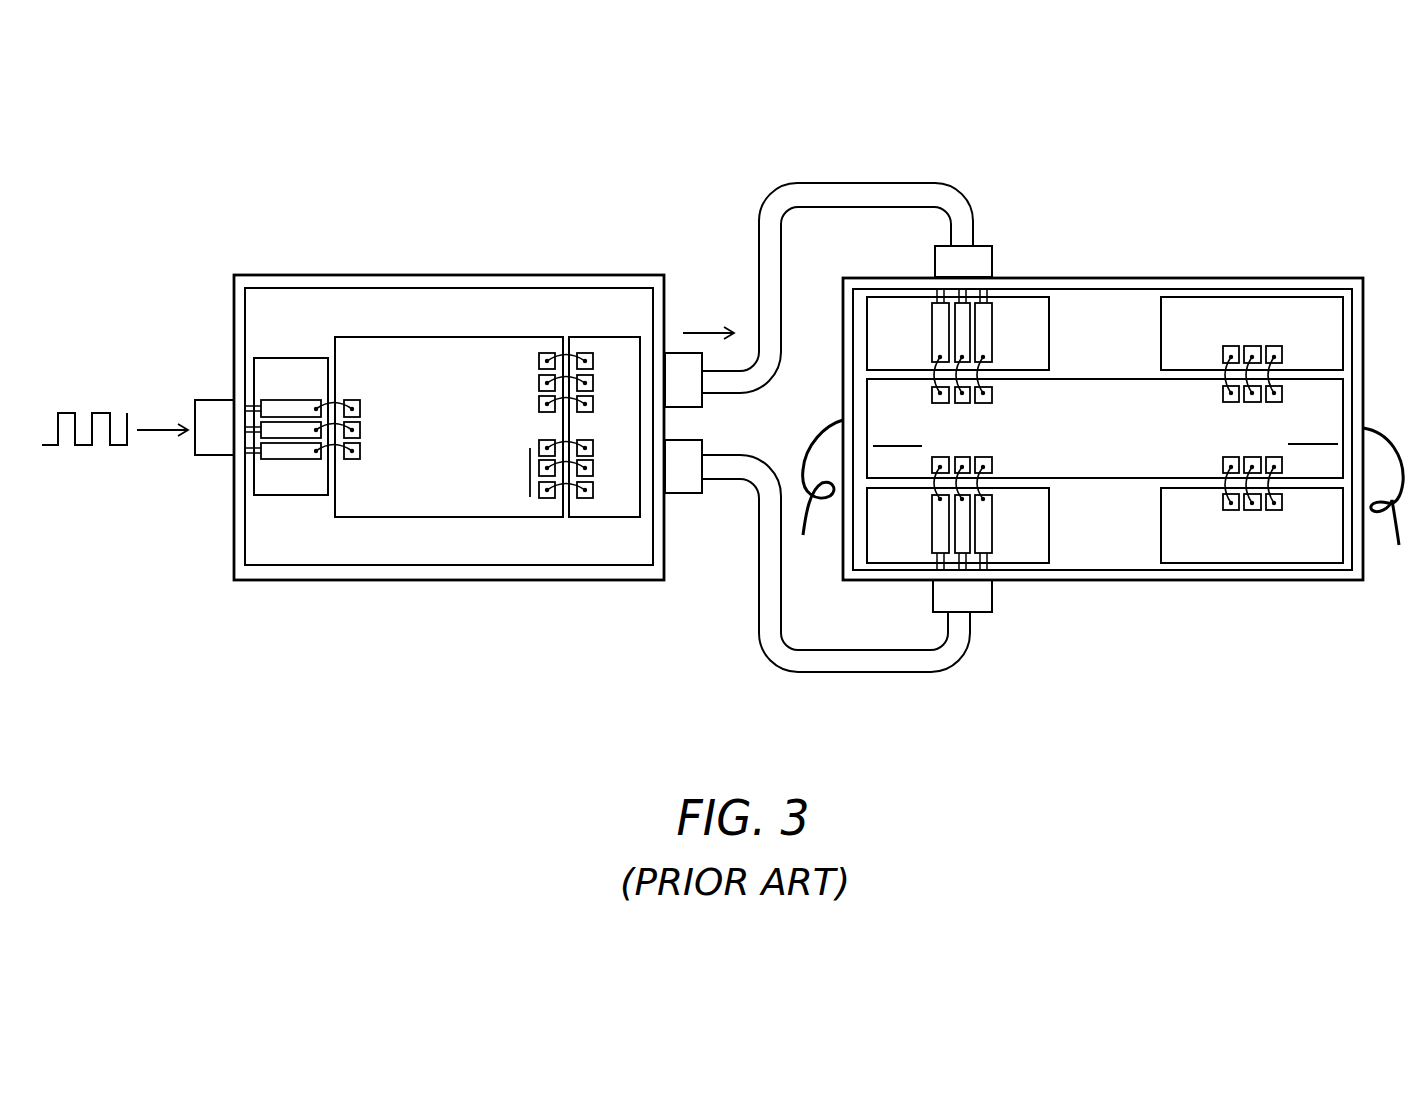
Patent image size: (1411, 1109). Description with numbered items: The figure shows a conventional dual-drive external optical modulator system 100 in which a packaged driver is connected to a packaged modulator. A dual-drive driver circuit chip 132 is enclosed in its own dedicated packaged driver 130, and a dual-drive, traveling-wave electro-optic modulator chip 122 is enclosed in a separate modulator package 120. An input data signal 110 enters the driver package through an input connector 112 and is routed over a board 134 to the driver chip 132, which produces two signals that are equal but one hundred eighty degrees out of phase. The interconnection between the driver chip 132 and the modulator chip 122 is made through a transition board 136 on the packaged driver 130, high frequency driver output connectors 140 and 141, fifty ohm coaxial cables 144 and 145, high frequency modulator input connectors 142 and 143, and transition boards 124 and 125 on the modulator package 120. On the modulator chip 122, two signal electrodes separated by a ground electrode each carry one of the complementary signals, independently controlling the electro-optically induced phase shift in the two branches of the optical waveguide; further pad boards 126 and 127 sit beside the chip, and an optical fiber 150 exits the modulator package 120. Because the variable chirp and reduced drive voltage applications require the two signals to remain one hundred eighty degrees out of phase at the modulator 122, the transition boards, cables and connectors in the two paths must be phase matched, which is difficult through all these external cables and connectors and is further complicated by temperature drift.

The system 100 is at (803, 133).
The input data signal 110 is at (98, 412).
The input connector 112 is at (212, 402).
The modulator package 120 is at (1200, 278).
The traveling-wave electro-optic modulator 122 is at (1127, 378).
The transition board 124 is at (1049, 320).
The transition board 125 is at (1047, 528).
The upper bond pad substrate 126 is at (1268, 318).
The lower bond pad substrate 127 is at (1292, 545).
The packaged driver 130 is at (455, 273).
The driver circuit 132 is at (450, 350).
The input interconnect substrate 134 is at (288, 468).
The transition board 136 is at (603, 498).
The high frequency driver output connector 140 is at (678, 353).
The high frequency driver output connector 141 is at (682, 485).
The high frequency modulator input connector 142 is at (994, 262).
The high frequency modulator input connector 143 is at (995, 598).
The 50 Ω coaxial cable 144 is at (770, 192).
The 50 Ω coaxial cable 145 is at (760, 655).
The optical fiber 150 is at (810, 441).